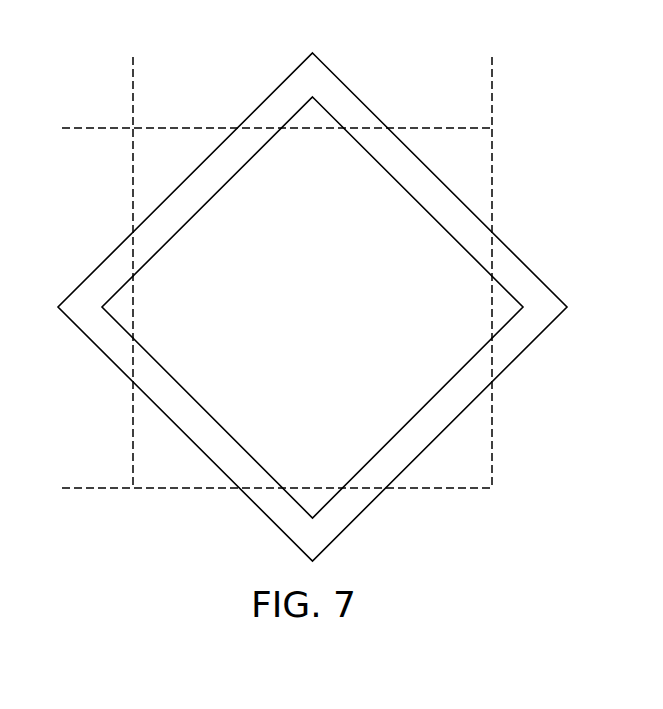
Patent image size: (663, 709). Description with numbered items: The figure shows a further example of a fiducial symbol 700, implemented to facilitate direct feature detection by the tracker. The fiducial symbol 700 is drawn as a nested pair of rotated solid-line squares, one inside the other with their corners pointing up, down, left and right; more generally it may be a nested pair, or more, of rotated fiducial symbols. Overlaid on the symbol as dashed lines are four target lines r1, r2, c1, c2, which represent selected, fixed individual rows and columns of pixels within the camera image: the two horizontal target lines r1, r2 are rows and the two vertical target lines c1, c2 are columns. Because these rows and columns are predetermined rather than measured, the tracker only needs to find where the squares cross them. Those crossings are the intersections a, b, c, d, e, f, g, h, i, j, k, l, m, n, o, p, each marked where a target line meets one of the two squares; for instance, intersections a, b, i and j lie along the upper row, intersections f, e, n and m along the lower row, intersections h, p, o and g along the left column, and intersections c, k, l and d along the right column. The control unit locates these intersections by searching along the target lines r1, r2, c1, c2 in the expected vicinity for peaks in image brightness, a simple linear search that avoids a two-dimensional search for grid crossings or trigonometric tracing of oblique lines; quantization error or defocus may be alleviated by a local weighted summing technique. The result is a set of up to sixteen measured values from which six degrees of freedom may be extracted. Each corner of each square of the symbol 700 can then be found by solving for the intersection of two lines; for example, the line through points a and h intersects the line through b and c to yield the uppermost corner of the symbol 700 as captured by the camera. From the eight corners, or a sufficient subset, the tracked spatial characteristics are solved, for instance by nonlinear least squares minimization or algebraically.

The fiducial symbol 700 is at (312, 280).
The target line c1 is at (133, 260).
The target line c2 is at (492, 260).
The target line r1 is at (269, 489).
The target line r2 is at (268, 128).
The intersection a is at (233, 118).
The intersection b is at (389, 116).
The intersection c is at (498, 227).
The intersection d is at (499, 390).
The intersection e is at (391, 499).
The intersection f is at (235, 499).
The intersection g is at (125, 390).
The intersection h is at (125, 225).
The intersection i is at (283, 141).
The intersection j is at (341, 141).
The intersection k is at (485, 283).
The intersection l is at (487, 330).
The intersection m is at (340, 476).
The intersection n is at (285, 476).
The intersection o is at (140, 334).
The intersection p is at (140, 284).